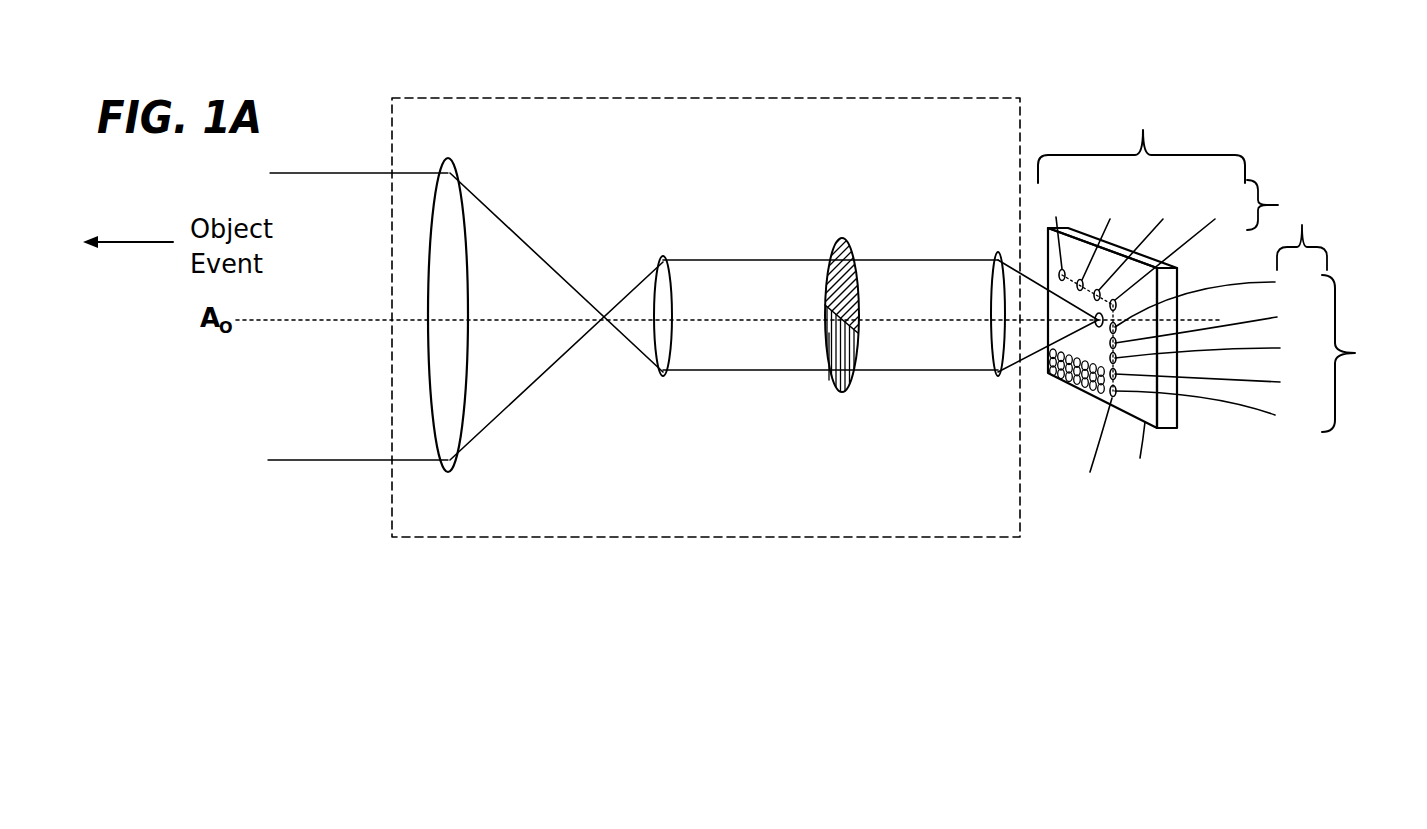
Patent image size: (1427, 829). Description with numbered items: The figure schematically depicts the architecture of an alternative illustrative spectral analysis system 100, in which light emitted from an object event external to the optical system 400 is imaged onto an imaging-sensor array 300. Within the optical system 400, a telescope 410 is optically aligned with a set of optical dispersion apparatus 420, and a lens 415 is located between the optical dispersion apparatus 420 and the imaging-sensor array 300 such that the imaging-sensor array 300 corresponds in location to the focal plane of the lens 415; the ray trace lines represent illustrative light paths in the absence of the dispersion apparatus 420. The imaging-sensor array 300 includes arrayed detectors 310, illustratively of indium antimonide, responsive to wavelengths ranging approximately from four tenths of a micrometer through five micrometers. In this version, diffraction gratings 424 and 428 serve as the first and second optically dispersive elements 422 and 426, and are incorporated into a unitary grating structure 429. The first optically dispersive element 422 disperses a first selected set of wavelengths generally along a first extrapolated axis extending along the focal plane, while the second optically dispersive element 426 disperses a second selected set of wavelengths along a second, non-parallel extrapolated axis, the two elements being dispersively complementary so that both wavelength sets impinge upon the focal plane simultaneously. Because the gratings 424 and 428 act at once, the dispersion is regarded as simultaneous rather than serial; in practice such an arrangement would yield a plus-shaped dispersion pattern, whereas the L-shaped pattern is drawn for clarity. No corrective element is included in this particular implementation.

The spectral analysis system 100 is at (283, 525).
The imaging-sensor array 300 is at (1163, 417).
The arrayed detectors 310 is at (1075, 387).
The optical system 400 is at (706, 317).
The telescope 410 is at (658, 168).
The lens 415 is at (997, 252).
The optical dispersion apparatus set 420 is at (859, 327).
The first optically dispersive element 422 is at (833, 288).
The diffraction grating 424 is at (834, 257).
The second optically dispersive element 426 is at (827, 347).
The diffraction grating 428 is at (830, 332).
The unitary grating structure 429 is at (853, 247).